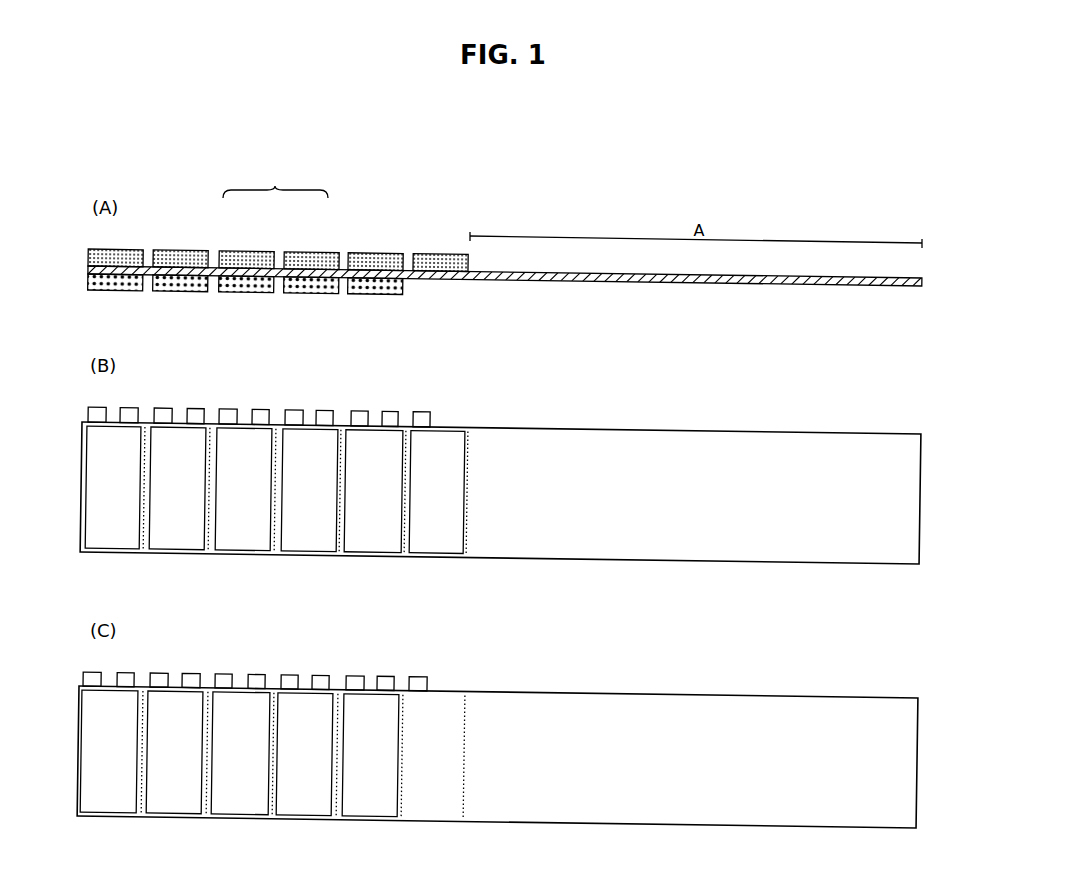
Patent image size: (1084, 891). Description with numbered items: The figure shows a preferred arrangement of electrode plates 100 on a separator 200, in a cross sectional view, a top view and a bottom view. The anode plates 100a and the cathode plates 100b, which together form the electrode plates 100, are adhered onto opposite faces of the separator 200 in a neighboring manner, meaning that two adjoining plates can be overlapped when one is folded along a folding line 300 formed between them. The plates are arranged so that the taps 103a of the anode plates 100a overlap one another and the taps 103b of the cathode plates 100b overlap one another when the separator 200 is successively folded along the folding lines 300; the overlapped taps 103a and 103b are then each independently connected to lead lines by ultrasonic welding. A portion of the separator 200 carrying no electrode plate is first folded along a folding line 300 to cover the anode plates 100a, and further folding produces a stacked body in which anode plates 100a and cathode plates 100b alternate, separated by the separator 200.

The electrode plates 100 is at (275, 182).
The anode plates 100a is at (312, 262).
The cathode plates 100b is at (237, 283).
The taps of the anode plates 103a is at (388, 420).
The taps of the cathode plates 103b is at (226, 416).
The separator 200 is at (585, 281).
The folding line 300 is at (468, 537).